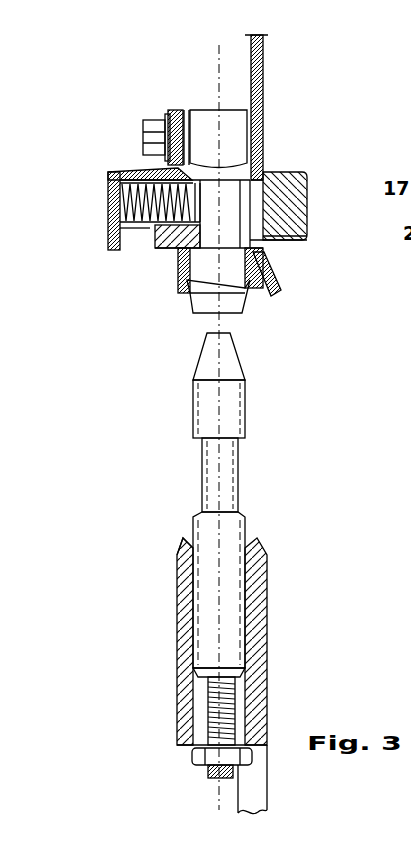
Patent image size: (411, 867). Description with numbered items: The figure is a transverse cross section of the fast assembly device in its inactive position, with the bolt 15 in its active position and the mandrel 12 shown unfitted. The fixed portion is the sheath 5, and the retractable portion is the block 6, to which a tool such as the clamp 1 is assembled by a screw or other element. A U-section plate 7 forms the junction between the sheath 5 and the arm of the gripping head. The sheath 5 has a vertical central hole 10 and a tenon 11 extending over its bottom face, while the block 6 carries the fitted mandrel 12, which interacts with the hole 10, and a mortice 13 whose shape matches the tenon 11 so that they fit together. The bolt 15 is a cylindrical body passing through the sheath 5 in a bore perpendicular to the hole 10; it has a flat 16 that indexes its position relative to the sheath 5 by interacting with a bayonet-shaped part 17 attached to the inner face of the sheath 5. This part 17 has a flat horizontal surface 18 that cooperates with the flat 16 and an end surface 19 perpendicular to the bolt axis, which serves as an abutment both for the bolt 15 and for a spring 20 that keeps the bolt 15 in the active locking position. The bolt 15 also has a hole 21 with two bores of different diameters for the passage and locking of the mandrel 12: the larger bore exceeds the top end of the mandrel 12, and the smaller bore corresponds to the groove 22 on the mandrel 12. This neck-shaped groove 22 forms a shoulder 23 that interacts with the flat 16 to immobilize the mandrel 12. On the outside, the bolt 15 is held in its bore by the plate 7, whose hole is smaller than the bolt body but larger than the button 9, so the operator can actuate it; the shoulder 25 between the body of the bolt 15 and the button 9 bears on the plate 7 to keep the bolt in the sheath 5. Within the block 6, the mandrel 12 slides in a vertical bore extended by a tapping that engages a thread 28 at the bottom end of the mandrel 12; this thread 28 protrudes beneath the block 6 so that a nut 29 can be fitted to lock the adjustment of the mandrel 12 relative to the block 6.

The clamp 1 is at (257, 785).
The sheath 5 is at (182, 120).
The block 6 is at (188, 602).
The U-section plate 7 is at (265, 57).
The button 9 is at (287, 212).
The vertical central hole 10 is at (228, 113).
The tenon 11 is at (188, 290).
The mandrel 12 is at (196, 416).
The mortice 13 is at (188, 541).
The bolt 15 is at (166, 253).
The flat 16 is at (160, 166).
The bayonet-shaped part 17 is at (106, 198).
The flat horizontal surface 18 is at (125, 171).
The end surface 19 is at (126, 235).
The spring 20 is at (108, 226).
The hole 21 is at (252, 290).
The groove 22 is at (225, 467).
The shoulder 23 is at (243, 438).
The shoulder 25 is at (298, 236).
The thread 28 is at (208, 771).
The nut 29 is at (197, 755).